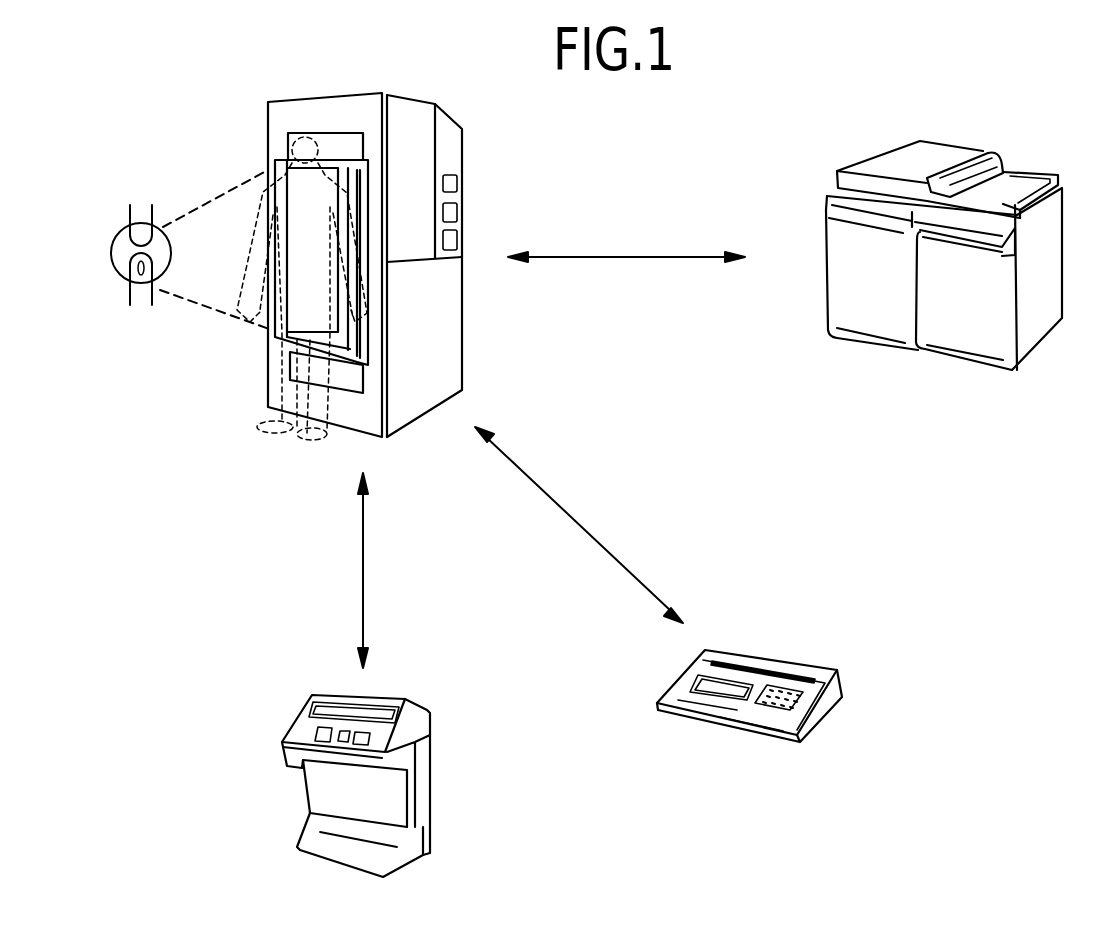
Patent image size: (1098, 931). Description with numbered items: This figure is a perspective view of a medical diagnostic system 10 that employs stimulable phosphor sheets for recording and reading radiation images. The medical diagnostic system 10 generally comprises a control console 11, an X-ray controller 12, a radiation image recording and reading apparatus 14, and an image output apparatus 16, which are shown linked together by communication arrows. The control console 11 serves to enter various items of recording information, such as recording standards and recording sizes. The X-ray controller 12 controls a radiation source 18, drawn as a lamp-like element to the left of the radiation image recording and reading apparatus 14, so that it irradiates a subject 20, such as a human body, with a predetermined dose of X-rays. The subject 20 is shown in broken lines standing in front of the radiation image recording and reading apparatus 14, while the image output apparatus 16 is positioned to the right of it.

The medical diagnostic system 10 is at (176, 527).
The control console 11 is at (687, 670).
The X-ray controller 12 is at (388, 805).
The radiation image recording and reading apparatus 14 is at (443, 360).
The image output apparatus 16 is at (842, 302).
The radiation source 18 is at (118, 277).
The subject 20 is at (268, 422).